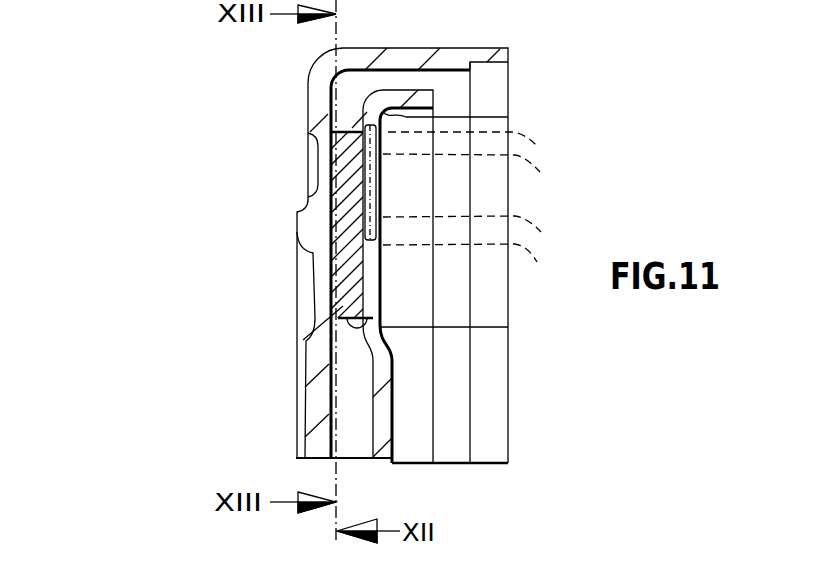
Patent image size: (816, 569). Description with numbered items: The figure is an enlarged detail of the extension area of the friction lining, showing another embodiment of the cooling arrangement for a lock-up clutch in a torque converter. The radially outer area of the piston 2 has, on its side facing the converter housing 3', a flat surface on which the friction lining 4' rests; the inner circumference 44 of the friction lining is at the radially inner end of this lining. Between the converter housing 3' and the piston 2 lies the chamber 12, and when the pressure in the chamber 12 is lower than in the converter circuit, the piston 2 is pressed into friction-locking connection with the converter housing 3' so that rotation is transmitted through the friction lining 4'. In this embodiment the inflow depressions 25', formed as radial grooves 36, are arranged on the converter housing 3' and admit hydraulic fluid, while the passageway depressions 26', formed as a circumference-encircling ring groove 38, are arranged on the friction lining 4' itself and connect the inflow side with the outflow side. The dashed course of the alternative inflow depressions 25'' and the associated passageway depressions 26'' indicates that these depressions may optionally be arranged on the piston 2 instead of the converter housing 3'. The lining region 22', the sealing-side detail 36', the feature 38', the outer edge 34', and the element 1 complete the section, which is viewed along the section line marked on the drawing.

The piston 1 is at (403, 405).
The piston 2 is at (345, 248).
The converter housing 3' is at (317, 411).
The seal 4' is at (306, 320).
The chamber 12 is at (330, 362).
The sealing lip 22' is at (328, 264).
The inflow depressions 25' is at (287, 165).
The passageway depressions 26' is at (285, 327).
The edge line 34' is at (472, 118).
The seal block 36' is at (304, 252).
The pin 38' is at (308, 182).
The radial groove 36 is at (479, 147).
The inflow depressions 25'' is at (481, 174).
The ring groove 38 is at (477, 231).
The hidden wall 26'' is at (478, 262).
The inner circumference 44 is at (508, 327).